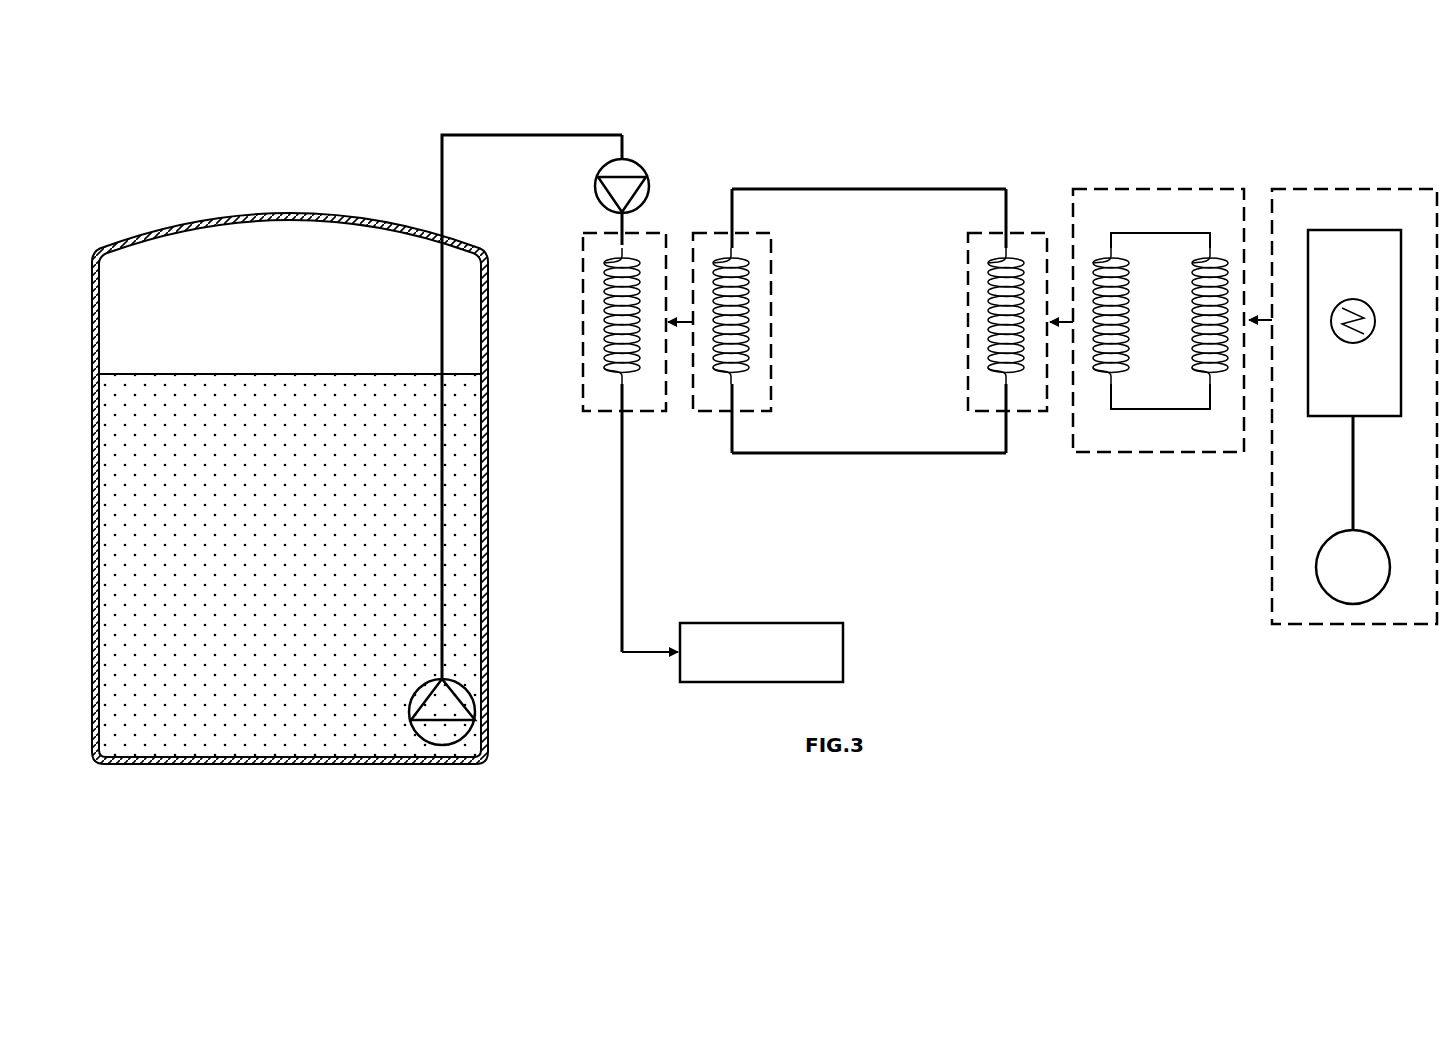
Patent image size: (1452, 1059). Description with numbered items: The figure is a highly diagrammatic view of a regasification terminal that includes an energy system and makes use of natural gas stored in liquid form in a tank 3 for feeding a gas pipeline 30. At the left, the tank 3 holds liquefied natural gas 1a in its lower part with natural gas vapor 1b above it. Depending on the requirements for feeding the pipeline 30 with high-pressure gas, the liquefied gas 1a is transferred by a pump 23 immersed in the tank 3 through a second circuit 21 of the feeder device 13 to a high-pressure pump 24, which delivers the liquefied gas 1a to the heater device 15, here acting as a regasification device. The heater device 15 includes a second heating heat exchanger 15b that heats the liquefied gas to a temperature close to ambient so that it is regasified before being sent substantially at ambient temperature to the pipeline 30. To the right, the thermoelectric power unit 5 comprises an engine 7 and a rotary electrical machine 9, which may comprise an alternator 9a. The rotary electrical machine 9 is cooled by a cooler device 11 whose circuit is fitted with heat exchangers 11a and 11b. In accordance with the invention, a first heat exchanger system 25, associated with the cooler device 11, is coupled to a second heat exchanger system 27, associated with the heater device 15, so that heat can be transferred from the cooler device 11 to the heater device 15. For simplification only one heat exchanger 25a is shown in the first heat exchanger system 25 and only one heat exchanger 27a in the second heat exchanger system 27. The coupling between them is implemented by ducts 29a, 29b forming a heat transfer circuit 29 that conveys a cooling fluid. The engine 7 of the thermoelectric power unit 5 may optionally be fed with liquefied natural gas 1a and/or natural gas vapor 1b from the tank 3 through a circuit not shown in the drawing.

The liquefied natural gas 1a is at (262, 715).
The natural gas vapor 1b is at (196, 265).
The tank 3 is at (303, 207).
The thermoelectric power unit 5 is at (1357, 626).
The engine 7 is at (1343, 556).
The rotary electrical machine 9 is at (1328, 228).
The alternator 9a is at (1354, 342).
The cooler device 11 is at (1148, 189).
The heat exchanger 11a is at (1104, 380).
The heat exchanger 11b is at (1218, 378).
The feeder device 13 is at (577, 106).
The heater device 15 is at (600, 418).
The second heating heat exchanger 15b is at (605, 290).
The second circuit 21 is at (508, 134).
The pump 23 is at (467, 705).
The high-pressure pump 24 is at (630, 172).
The first heat exchanger system 25 is at (966, 328).
The heat exchanger 25a is at (996, 288).
The second heat exchanger system 27 is at (774, 300).
The heat exchanger 27a is at (750, 272).
The heat transfer circuit 29 is at (852, 188).
The duct 29a is at (918, 453).
The duct 29b is at (910, 189).
The gas pipeline 30 is at (732, 652).